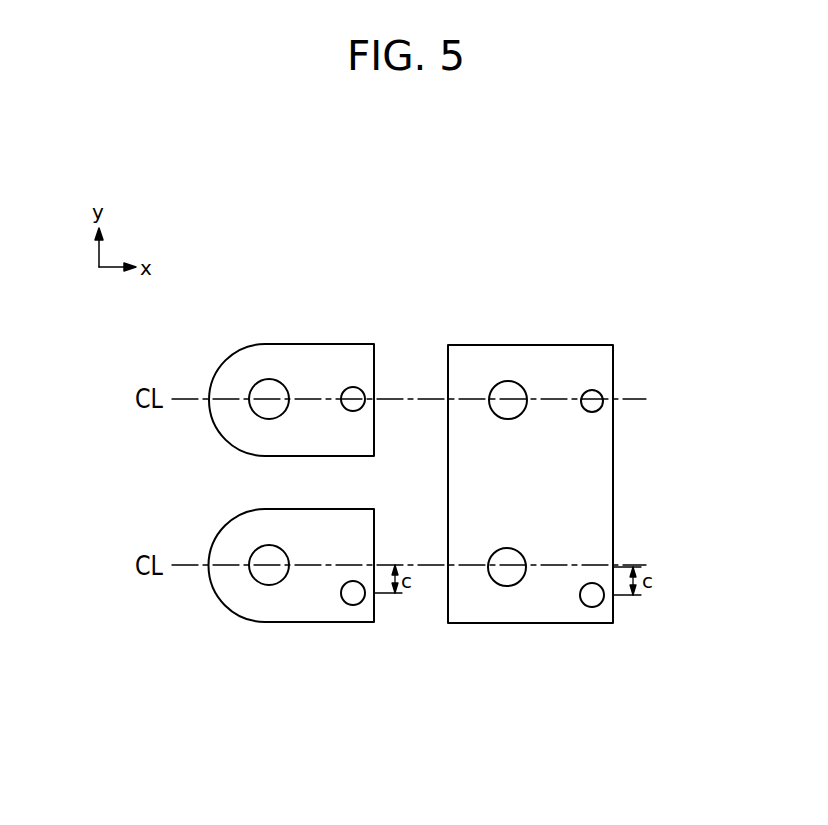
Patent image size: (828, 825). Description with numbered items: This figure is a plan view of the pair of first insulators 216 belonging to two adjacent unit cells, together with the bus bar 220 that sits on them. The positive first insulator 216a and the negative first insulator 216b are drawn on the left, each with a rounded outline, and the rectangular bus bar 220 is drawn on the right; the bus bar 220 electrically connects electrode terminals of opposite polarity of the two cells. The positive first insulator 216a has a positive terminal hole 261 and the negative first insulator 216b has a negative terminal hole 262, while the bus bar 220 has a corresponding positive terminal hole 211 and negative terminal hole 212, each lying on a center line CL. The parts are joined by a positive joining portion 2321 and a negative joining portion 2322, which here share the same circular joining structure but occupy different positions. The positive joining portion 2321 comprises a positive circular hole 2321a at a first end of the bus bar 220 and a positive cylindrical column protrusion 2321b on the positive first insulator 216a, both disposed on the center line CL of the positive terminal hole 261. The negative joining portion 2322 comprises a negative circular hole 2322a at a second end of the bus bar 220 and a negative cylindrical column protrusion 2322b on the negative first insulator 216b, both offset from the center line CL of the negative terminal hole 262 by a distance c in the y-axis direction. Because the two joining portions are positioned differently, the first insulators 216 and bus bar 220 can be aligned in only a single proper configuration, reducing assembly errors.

The first insulators 216 is at (110, 350).
The positive first insulator 216a is at (283, 344).
The negative first insulator 216b is at (302, 622).
The positive terminal hole 261 is at (252, 386).
The negative terminal hole 262 is at (257, 583).
The bus bar 220 is at (613, 360).
The positive terminal hole 211 is at (508, 419).
The negative terminal hole 212 is at (510, 570).
The positive joining portion 2321 is at (605, 228).
The positive circular hole 2321a is at (593, 396).
The positive cylindrical column protrusion 2321b is at (348, 391).
The negative joining portion 2322 is at (540, 731).
The negative circular hole 2322a is at (592, 607).
The negative cylindrical column protrusion 2322b is at (353, 605).